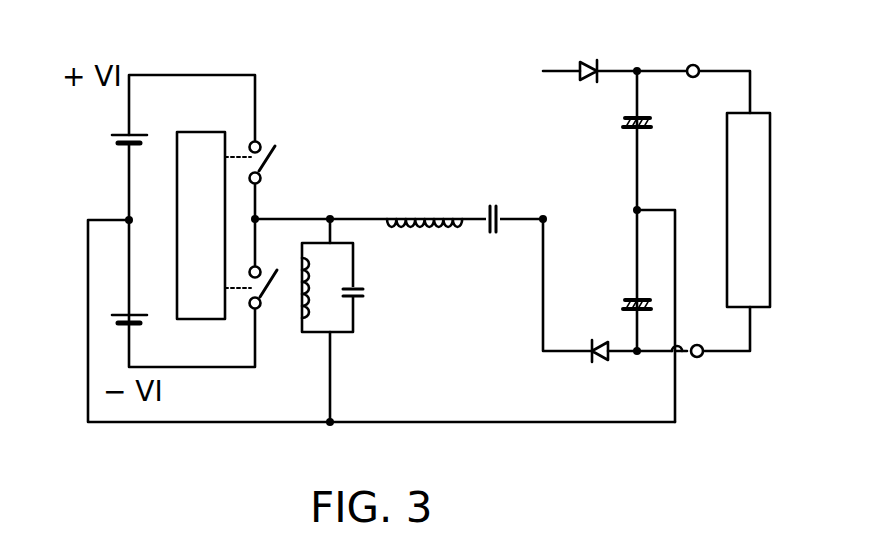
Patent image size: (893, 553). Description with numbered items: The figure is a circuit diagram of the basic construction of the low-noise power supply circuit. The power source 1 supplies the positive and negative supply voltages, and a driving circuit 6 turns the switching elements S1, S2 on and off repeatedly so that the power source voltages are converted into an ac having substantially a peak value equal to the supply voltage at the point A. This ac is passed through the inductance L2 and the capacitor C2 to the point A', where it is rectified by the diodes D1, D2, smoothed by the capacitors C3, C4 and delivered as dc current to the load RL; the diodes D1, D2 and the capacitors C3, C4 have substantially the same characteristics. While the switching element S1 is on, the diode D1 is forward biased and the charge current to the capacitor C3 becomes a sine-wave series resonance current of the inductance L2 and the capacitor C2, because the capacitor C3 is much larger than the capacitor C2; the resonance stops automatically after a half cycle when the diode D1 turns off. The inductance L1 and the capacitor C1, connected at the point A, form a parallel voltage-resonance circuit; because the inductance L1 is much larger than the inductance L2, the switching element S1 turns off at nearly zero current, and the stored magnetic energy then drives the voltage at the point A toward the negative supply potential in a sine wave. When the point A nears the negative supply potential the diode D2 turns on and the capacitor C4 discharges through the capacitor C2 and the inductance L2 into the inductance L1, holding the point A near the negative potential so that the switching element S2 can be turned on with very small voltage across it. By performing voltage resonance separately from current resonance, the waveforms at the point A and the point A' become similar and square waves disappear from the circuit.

The DC power source (battery) 1 is at (113, 149).
The switch driving circuit 6 is at (200, 132).
The switching element S1 is at (269, 153).
The switching element S2 is at (270, 284).
The point A is at (297, 175).
The point A' is at (510, 269).
The inductance L1 is at (312, 300).
The capacitor C1 is at (362, 297).
The inductance L2 is at (415, 216).
The capacitor C2 is at (493, 206).
The diode D1 is at (588, 69).
The diode D2 is at (604, 343).
The capacitor C3 is at (642, 128).
The capacitor C4 is at (633, 299).
The load RL is at (748, 210).